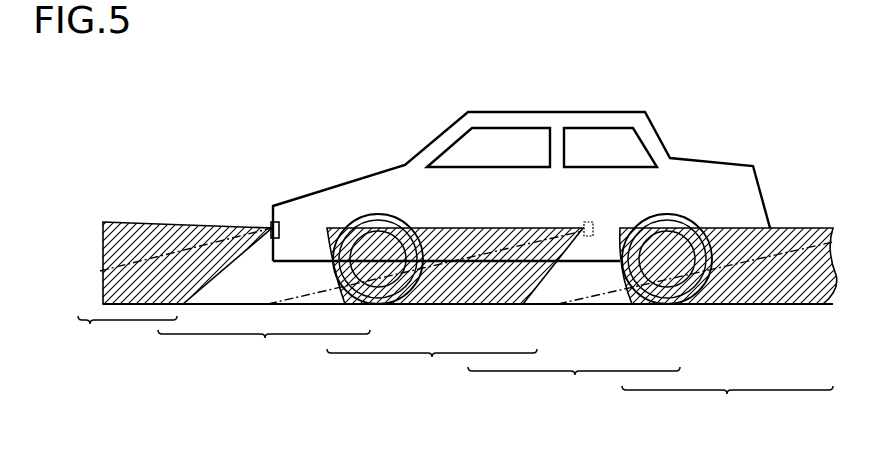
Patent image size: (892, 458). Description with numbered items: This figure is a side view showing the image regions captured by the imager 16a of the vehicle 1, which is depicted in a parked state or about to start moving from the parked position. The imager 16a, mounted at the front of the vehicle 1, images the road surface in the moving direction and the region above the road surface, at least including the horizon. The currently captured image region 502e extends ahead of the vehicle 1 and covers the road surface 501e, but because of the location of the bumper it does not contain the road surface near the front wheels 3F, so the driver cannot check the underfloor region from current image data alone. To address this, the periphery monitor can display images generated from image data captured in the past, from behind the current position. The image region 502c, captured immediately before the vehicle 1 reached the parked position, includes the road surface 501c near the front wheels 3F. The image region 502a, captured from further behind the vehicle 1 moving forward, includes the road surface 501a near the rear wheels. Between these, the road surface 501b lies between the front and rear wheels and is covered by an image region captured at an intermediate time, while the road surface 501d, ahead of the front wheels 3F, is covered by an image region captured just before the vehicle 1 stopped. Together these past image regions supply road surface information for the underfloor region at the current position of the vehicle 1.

The vehicle 1 is at (500, 179).
The front wheels 3F is at (375, 215).
The imager 16a is at (271, 224).
The image region 502a is at (733, 228).
The image region 502c is at (453, 228).
The image region 502e is at (138, 222).
The road surface 501a is at (727, 403).
The road surface 501b is at (574, 385).
The road surface 501c is at (432, 369).
The road surface 501d is at (264, 348).
The road surface 501e is at (125, 335).